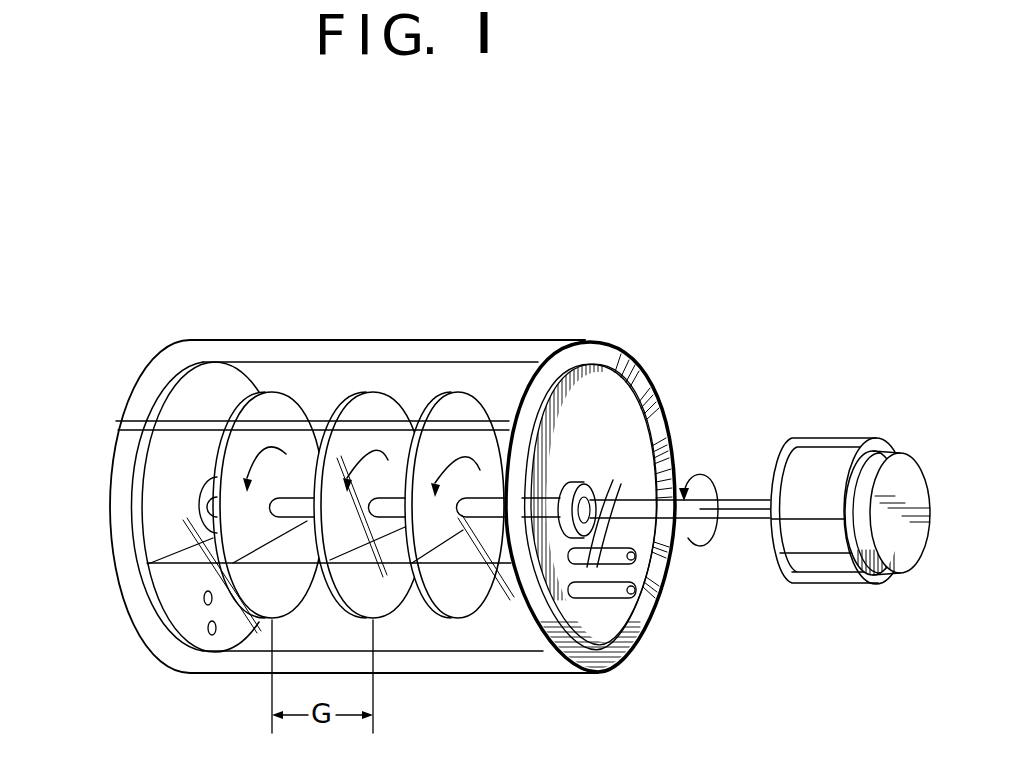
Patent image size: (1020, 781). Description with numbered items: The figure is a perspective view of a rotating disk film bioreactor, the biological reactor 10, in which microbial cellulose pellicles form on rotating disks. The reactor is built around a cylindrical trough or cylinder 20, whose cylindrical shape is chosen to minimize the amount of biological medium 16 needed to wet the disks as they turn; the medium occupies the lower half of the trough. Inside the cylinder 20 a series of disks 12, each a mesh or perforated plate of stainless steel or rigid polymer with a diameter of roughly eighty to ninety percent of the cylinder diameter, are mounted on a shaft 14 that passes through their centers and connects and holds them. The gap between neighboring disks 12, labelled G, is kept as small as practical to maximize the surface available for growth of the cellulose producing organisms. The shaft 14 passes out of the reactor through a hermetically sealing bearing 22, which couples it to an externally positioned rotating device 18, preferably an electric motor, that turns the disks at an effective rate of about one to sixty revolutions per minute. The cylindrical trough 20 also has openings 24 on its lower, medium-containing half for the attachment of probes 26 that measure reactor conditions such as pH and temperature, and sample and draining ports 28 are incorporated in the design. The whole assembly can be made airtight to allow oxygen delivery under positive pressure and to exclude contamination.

The biological reactor 10 is at (607, 334).
The disk 12 is at (435, 414).
The shaft 14 is at (733, 514).
The biological medium 16 is at (176, 555).
The rotating device 18 is at (815, 450).
The cylinder 20 is at (178, 403).
The hermetically sealing bearing 22 is at (563, 484).
The openings 24 is at (609, 512).
The probes 26 is at (527, 580).
The sample and draining ports 28 is at (206, 628).